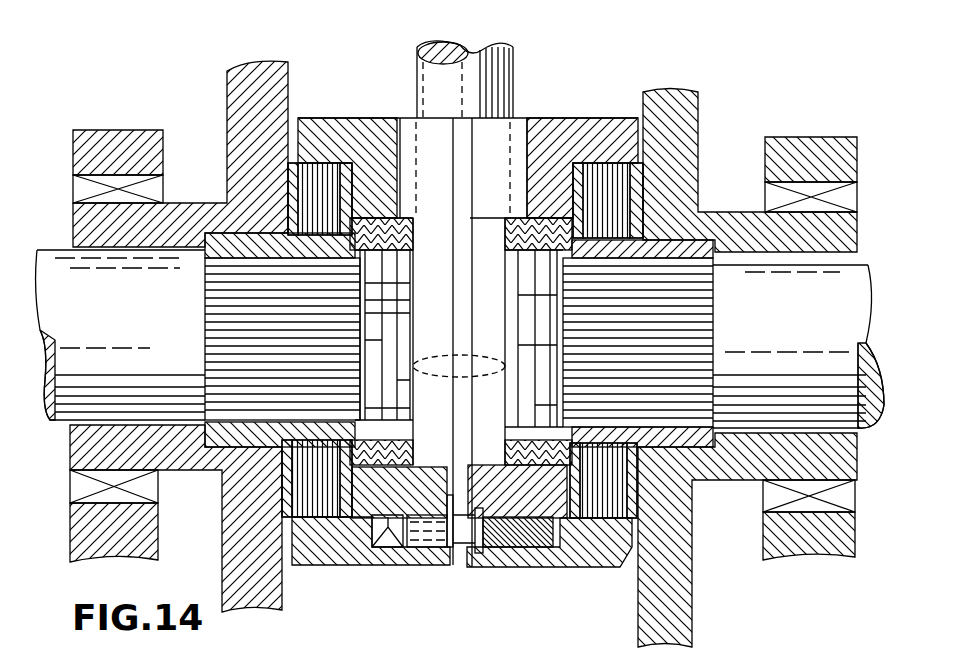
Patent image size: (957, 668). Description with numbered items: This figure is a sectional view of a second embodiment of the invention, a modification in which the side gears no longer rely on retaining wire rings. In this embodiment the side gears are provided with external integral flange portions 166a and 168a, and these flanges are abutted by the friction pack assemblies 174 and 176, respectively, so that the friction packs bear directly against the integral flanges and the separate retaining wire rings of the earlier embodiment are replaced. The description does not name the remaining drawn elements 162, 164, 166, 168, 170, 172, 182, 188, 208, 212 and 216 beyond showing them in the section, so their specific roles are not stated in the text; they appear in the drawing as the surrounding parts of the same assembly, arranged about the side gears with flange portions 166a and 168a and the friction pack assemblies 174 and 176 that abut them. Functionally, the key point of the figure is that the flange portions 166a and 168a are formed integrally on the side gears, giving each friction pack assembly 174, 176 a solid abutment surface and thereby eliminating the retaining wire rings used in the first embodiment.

The left clamp block 162 is at (312, 118).
The lower housing block 164 is at (616, 567).
The left bearing 166 is at (220, 238).
The external integral flange portion 166a is at (399, 492).
The right bearing 168 is at (670, 243).
The external integral flange portion 168a is at (560, 452).
The left shaft 170 is at (147, 337).
The right shaft 172 is at (810, 327).
The friction pack assembly 174 is at (340, 162).
The friction pack assembly 176 is at (585, 170).
The locating block 182 is at (359, 552).
The right housing wall 188 is at (640, 505).
The pin 208 is at (420, 533).
The bolt 212 is at (482, 552).
The spacer plate 216 is at (460, 570).